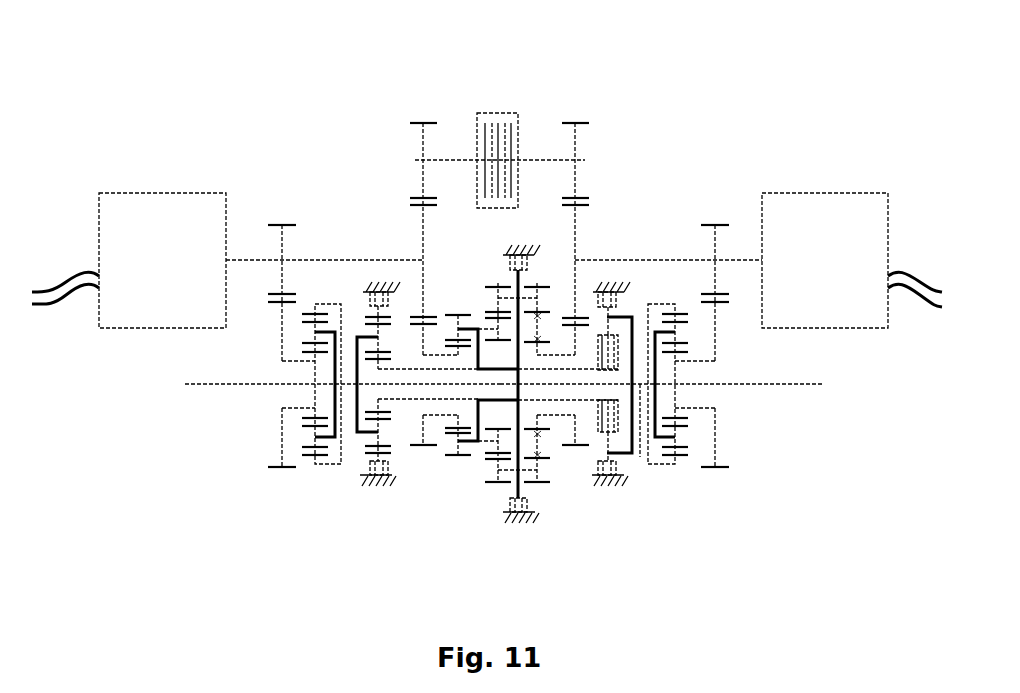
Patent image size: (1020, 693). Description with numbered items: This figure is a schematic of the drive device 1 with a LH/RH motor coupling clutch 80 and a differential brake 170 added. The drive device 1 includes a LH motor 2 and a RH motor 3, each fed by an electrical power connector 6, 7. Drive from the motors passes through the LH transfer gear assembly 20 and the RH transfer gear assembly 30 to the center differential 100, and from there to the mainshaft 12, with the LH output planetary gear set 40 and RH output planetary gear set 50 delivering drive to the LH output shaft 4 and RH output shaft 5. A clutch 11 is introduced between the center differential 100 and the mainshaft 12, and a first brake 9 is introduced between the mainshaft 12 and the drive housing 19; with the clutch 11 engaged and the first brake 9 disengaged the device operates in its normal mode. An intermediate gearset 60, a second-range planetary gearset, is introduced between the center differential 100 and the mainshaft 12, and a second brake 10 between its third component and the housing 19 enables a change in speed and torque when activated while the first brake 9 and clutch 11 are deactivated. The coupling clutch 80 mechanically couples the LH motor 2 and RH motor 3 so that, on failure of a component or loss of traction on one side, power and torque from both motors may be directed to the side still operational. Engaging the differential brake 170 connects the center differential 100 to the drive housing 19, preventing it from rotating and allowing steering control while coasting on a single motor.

The drive device 1 is at (127, 46).
The LH motor 2 is at (128, 192).
The RH motor 3 is at (888, 206).
The LH output shaft 4 is at (188, 386).
The RH output shaft 5 is at (807, 387).
The electrical power connector 6 is at (60, 288).
The electrical power connector 7 is at (928, 286).
The first brake 9 is at (597, 468).
The second brake 10 is at (388, 467).
The clutch 11 is at (606, 451).
The mainshaft 12 is at (640, 458).
The drive housing 19 is at (515, 248).
The LH transfer gear assembly 20 is at (399, 182).
The RH transfer gear assembly 30 is at (710, 210).
The LH output planetary gear set 40 is at (327, 490).
The RH output planetary gear set 50 is at (663, 480).
The intermediate gearset 60 is at (356, 462).
The LH/RH motor coupling clutch 80 is at (488, 99).
The center differential 100 is at (493, 512).
The differential brake 170 is at (508, 268).